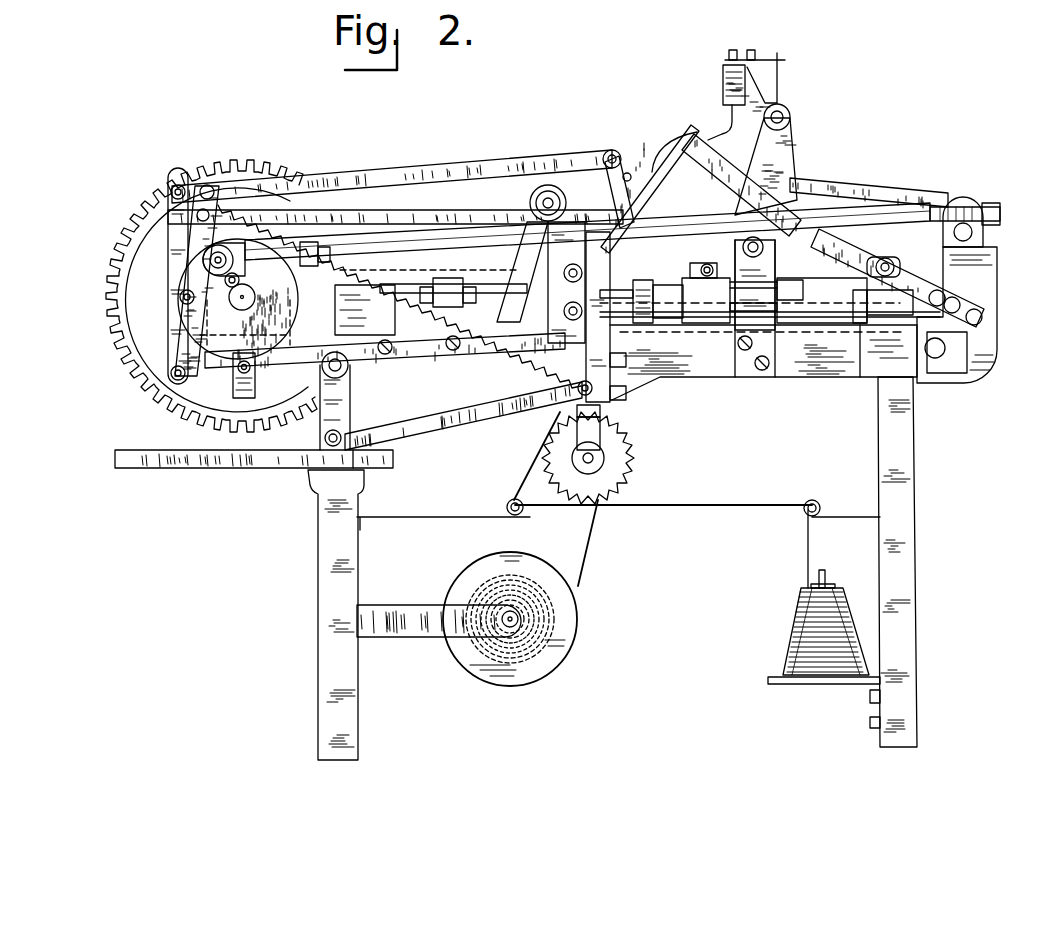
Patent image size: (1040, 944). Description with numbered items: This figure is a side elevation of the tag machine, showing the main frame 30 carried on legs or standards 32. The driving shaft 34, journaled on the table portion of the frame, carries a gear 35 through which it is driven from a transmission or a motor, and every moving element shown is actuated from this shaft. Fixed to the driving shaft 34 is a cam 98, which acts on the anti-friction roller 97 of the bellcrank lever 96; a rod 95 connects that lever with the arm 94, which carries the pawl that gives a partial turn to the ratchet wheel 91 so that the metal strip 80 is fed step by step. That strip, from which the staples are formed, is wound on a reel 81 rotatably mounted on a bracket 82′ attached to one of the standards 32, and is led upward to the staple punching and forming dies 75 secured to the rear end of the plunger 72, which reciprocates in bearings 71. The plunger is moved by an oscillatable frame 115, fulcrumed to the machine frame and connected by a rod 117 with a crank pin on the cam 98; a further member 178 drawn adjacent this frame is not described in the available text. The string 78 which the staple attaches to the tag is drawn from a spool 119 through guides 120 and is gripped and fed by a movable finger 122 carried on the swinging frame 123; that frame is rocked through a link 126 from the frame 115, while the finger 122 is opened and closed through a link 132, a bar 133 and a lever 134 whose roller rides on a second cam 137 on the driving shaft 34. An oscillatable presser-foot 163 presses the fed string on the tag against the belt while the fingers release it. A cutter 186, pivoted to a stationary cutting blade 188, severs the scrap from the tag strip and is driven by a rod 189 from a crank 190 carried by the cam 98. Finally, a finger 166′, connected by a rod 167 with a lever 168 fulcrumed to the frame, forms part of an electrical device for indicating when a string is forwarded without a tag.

The main frame 30 is at (805, 372).
The legs or standards 32 is at (324, 567).
The driving shaft 34 is at (242, 301).
The gear 35 is at (118, 262).
The bearings 71 is at (868, 282).
The plunger 72 is at (820, 286).
The staple punching and forming dies 75 is at (640, 286).
The string 78 is at (748, 505).
The metal strip 80 is at (592, 552).
The reel 81 is at (578, 632).
The bracket 82′ is at (416, 606).
The ratchet wheel 91 is at (622, 448).
The arm 94 is at (600, 425).
The rod 95 is at (450, 408).
The bellcrank lever 96 is at (348, 393).
The anti-friction roller 97 is at (238, 375).
The cam 98 is at (285, 340).
The oscillatable frame 115 is at (986, 258).
The rod 117 is at (845, 212).
The spool 119 is at (845, 600).
The guides 120 is at (509, 502).
The finger 122 is at (718, 124).
The swinging frame 123 is at (762, 92).
The link 126 is at (903, 190).
The link 132 is at (790, 138).
The bar 133 is at (458, 211).
The lever 134 is at (186, 323).
The cam 137 is at (268, 250).
The presser-foot 163 is at (672, 152).
The finger 166′ is at (620, 175).
The rod 167 is at (443, 176).
The lever 168 is at (170, 232).
The bar 178 is at (862, 262).
The cutter 186 is at (535, 222).
The stationary cutting blade 188 is at (568, 235).
The rod 189 is at (455, 300).
The crank 190 is at (208, 260).